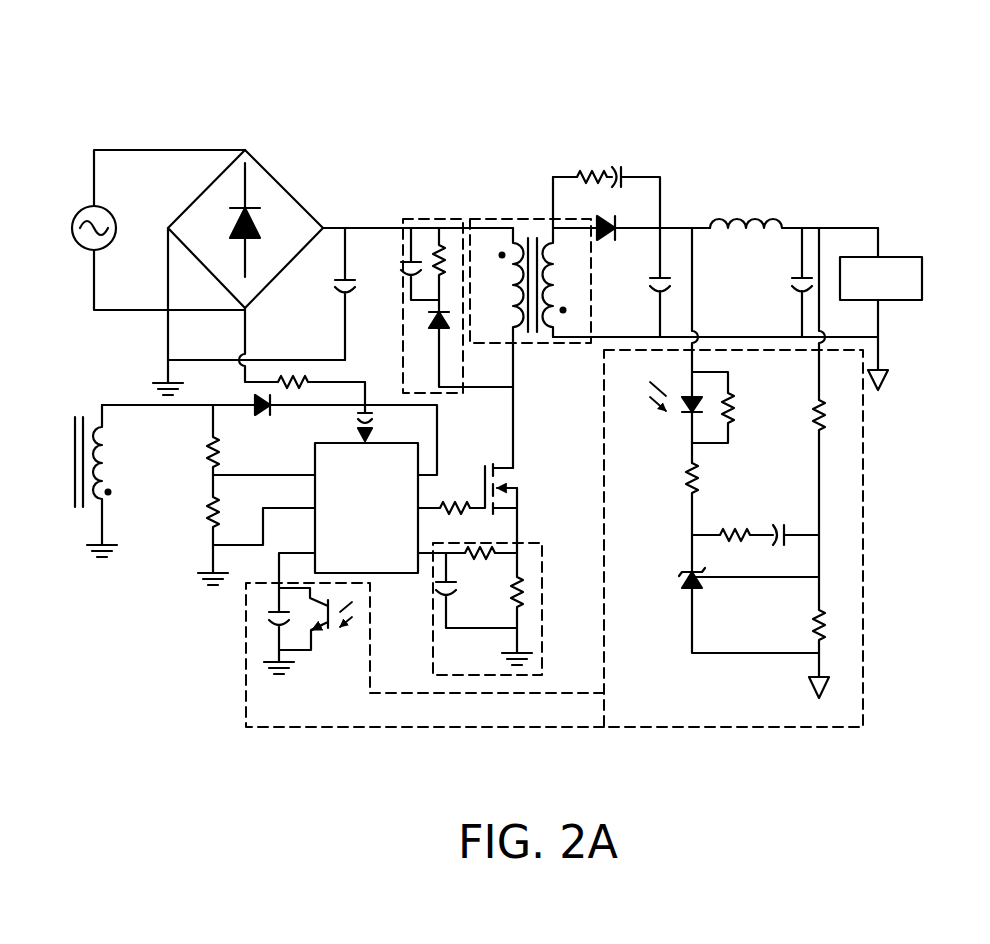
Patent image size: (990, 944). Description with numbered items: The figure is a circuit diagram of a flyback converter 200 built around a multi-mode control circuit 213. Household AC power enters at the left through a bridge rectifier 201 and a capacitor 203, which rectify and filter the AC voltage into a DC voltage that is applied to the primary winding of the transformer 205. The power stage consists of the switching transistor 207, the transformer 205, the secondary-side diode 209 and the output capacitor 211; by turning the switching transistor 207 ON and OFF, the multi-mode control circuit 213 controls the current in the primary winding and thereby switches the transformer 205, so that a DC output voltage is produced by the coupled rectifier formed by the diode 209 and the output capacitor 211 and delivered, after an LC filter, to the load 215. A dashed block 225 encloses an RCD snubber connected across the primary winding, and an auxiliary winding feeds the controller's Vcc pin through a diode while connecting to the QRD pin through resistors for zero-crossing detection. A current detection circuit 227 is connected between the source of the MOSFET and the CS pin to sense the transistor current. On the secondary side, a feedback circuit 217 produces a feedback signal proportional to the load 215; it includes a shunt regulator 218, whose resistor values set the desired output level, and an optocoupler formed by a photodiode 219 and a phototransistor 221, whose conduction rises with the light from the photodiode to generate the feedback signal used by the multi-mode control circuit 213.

The flyback converter 200 is at (70, 80).
The bridge rectifier 201 is at (280, 220).
The capacitor 203 is at (364, 284).
The transformer 205 is at (535, 218).
The switching transistor 207 is at (523, 486).
The diode 209 is at (614, 210).
The output capacitor 211 is at (667, 266).
The multi-mode control circuit 213 is at (385, 575).
The load 215 is at (926, 275).
The feedback circuit 217 is at (765, 538).
The shunt regulator 218 is at (758, 458).
The photodiode 219 is at (662, 430).
The phototransistor 221 is at (345, 627).
The clamp circuit 225 is at (432, 218).
The current detection circuit 227 is at (545, 605).